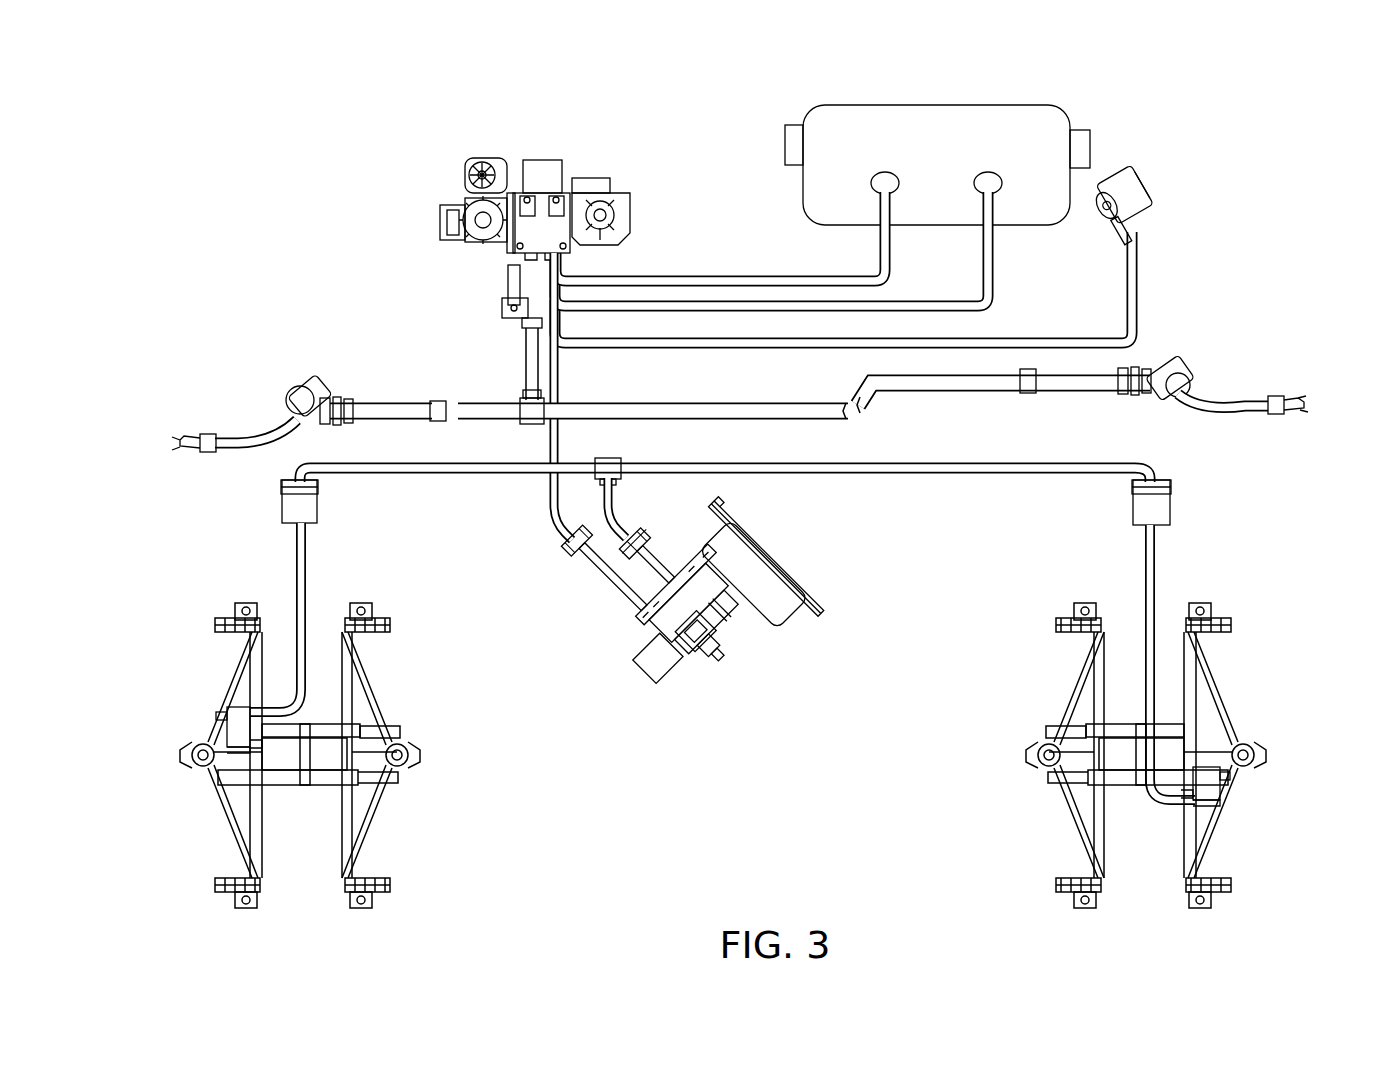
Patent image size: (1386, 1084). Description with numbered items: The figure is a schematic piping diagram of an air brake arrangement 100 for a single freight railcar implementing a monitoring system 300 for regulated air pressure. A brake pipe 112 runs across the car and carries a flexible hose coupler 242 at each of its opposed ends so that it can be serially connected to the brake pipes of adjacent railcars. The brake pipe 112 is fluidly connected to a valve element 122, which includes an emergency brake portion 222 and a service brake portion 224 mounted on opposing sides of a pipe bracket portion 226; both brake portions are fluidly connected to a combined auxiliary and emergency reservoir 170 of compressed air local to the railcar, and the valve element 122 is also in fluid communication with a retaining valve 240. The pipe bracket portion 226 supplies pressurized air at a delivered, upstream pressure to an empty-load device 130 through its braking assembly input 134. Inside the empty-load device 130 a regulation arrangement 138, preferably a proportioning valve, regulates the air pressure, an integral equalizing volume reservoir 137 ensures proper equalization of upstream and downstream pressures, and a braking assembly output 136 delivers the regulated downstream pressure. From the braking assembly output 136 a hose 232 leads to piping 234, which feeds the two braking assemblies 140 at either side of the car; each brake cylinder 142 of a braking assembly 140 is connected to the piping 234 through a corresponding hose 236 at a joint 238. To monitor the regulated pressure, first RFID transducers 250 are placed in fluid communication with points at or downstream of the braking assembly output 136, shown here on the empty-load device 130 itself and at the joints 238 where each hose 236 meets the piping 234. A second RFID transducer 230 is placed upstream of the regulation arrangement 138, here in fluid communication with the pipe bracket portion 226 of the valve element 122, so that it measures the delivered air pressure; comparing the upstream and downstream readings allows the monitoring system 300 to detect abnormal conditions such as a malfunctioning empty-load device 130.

The air brake arrangement 100 is at (1288, 252).
The brake pipe 112 is at (400, 403).
The valve element 122 is at (538, 197).
The empty-load device 130 is at (701, 583).
The braking assembly input 134 is at (642, 620).
The braking assembly output 136 is at (678, 580).
The integral equalizing volume reservoir 137 is at (748, 556).
The regulation arrangement 138 is at (690, 640).
The braking assembly 140 is at (752, 739).
The brake cylinder 142 is at (222, 710).
The combined auxiliary and emergency reservoir 170 is at (972, 112).
The emergency brake portion 222 is at (465, 193).
The service brake portion 224 is at (612, 193).
The pipe bracket portion 226 is at (570, 250).
The second RFID transducer 230 is at (543, 176).
The hose 232 is at (648, 553).
The piping 234 is at (850, 473).
The hose 236 is at (307, 565).
The joint 238 is at (320, 486).
The retaining valve 240 is at (1130, 176).
The flexible hose coupler 242 is at (246, 431).
The first RFID transducer 250 is at (312, 512).
The monitoring system 300 is at (830, 709).